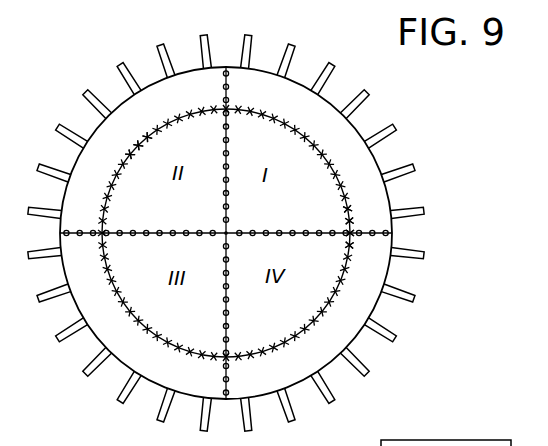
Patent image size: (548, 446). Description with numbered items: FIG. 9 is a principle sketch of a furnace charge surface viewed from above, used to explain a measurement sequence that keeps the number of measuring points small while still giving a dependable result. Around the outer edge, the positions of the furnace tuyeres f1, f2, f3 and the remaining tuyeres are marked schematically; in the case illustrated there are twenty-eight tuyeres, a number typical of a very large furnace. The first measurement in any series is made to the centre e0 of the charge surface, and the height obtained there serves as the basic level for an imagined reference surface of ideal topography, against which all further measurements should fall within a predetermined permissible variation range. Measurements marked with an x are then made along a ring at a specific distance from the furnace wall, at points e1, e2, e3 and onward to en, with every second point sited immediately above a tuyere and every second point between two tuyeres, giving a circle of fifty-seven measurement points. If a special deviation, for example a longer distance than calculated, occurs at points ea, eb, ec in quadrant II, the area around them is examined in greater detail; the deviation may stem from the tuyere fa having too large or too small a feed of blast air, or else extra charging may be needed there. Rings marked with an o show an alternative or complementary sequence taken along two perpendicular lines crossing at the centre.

The tuyere fa is at (84, 93).
The furnace tuyere f1 is at (332, 65).
The furnace tuyere f2 is at (367, 93).
The furnace tuyere f3 is at (396, 128).
The centre of the charge surface e0 is at (226, 233).
The measuring point e1 is at (350, 236).
The measuring point e2 is at (349, 221).
The measuring point e3 is at (348, 209).
The measuring point en is at (349, 245).
The measuring point ea is at (147, 137).
The measuring point eb is at (138, 146).
The measuring point ec is at (130, 154).